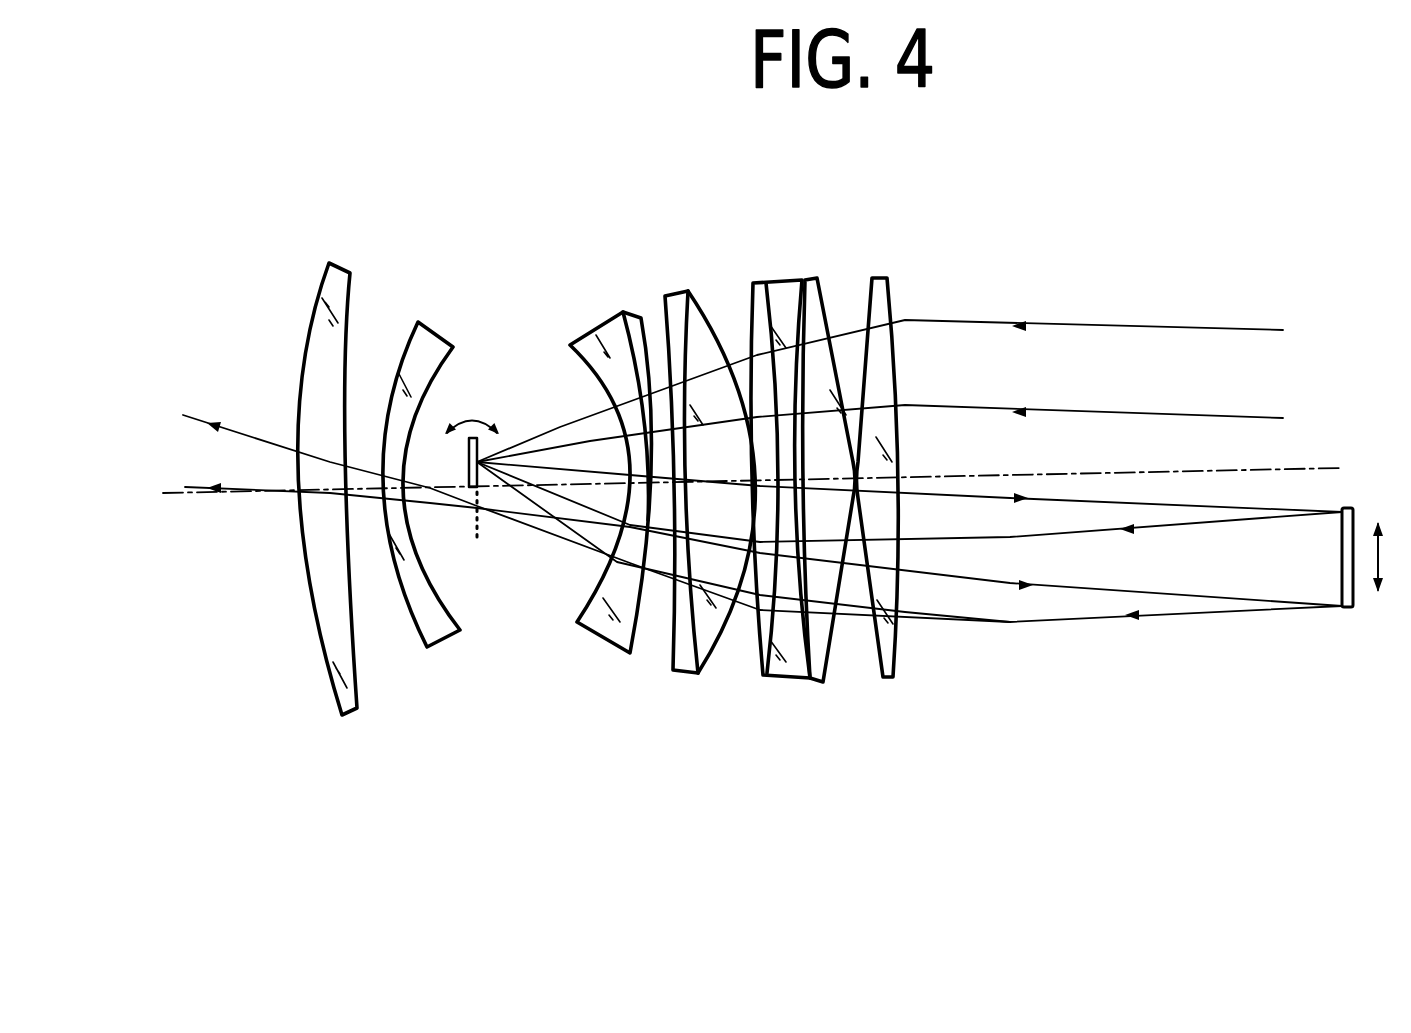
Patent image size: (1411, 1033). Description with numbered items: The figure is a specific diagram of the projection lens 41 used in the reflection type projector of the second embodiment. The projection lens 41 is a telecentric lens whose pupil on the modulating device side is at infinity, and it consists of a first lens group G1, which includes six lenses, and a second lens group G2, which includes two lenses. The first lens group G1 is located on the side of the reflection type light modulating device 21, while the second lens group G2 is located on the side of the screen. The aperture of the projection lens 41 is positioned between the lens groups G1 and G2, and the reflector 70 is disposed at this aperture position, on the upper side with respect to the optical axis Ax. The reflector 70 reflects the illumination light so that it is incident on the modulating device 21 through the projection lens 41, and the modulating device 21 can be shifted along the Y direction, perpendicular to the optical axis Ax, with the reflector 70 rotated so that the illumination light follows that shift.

The reflector 70 is at (478, 448).
The reflection type light modulating device 21 is at (1347, 609).
The projection lens 41 is at (605, 580).
The first lens group G1 is at (913, 690).
The second lens group G2 is at (475, 725).
The optical axis Ax is at (1304, 470).
The Y direction Y is at (1392, 557).